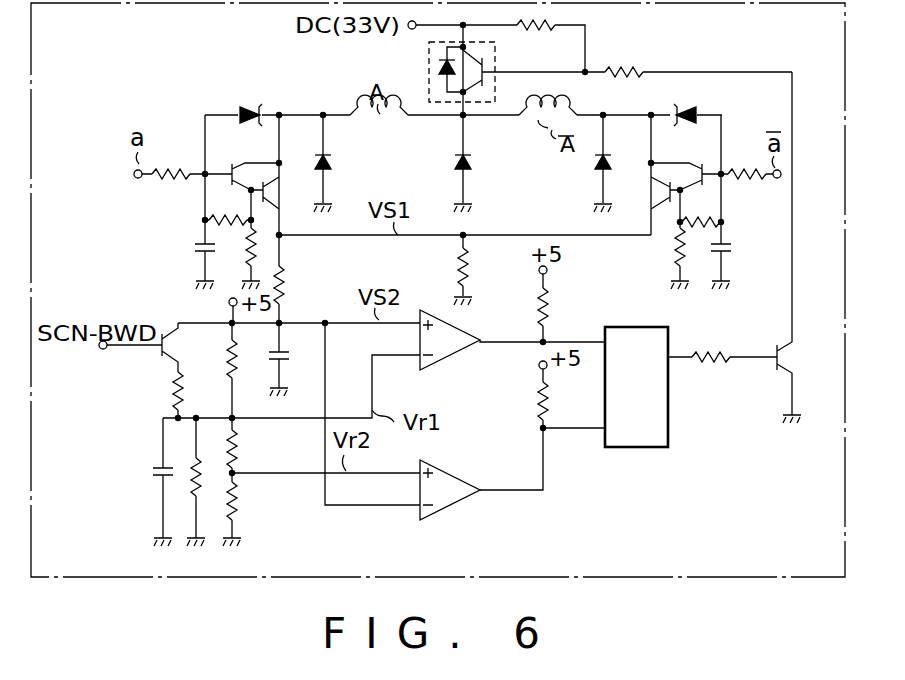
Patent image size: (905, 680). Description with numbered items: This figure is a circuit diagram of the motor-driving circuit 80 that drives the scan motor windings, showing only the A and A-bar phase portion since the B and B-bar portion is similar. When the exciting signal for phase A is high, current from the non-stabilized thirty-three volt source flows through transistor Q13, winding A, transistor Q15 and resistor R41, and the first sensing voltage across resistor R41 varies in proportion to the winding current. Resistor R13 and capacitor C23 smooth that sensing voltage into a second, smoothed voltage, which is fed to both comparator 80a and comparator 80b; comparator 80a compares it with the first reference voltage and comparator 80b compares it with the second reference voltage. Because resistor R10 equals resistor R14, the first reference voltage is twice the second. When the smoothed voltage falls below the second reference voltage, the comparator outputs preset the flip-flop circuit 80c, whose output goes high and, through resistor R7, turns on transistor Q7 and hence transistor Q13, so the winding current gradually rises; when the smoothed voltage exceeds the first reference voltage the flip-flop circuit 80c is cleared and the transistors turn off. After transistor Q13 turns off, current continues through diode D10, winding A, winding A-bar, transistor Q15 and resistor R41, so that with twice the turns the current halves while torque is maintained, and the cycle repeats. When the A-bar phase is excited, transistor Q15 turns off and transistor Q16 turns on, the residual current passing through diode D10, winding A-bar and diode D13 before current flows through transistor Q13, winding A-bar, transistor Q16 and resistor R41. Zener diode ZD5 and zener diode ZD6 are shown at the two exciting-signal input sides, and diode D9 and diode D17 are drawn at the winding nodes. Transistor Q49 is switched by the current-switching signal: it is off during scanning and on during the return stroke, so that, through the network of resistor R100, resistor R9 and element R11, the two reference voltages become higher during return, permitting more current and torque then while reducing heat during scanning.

The motor-driving circuit 80 is at (772, 577).
The comparator 80a is at (456, 354).
The comparator 80b is at (456, 504).
The flip-flop circuit 80c is at (662, 434).
The transistor Q13 is at (495, 60).
The diode D13 is at (440, 66).
The zener diode ZD5 is at (250, 112).
The zener diode ZD6 is at (684, 112).
The transistor Q15 is at (268, 194).
The transistor Q16 is at (666, 190).
The diode D9 is at (332, 163).
The diode D17 is at (472, 163).
The diode D10 is at (594, 163).
The resistor R41 is at (484, 270).
The resistor R13 is at (303, 279).
The transistor Q49 is at (170, 328).
The resistor R100 is at (145, 395).
The resistor R9 is at (214, 370).
The resistor R11 is at (166, 476).
The resistor R10 is at (255, 445).
The resistor R14 is at (255, 505).
The capacitor C23 is at (290, 353).
The resistor R7 is at (722, 343).
The transistor Q7 is at (782, 360).